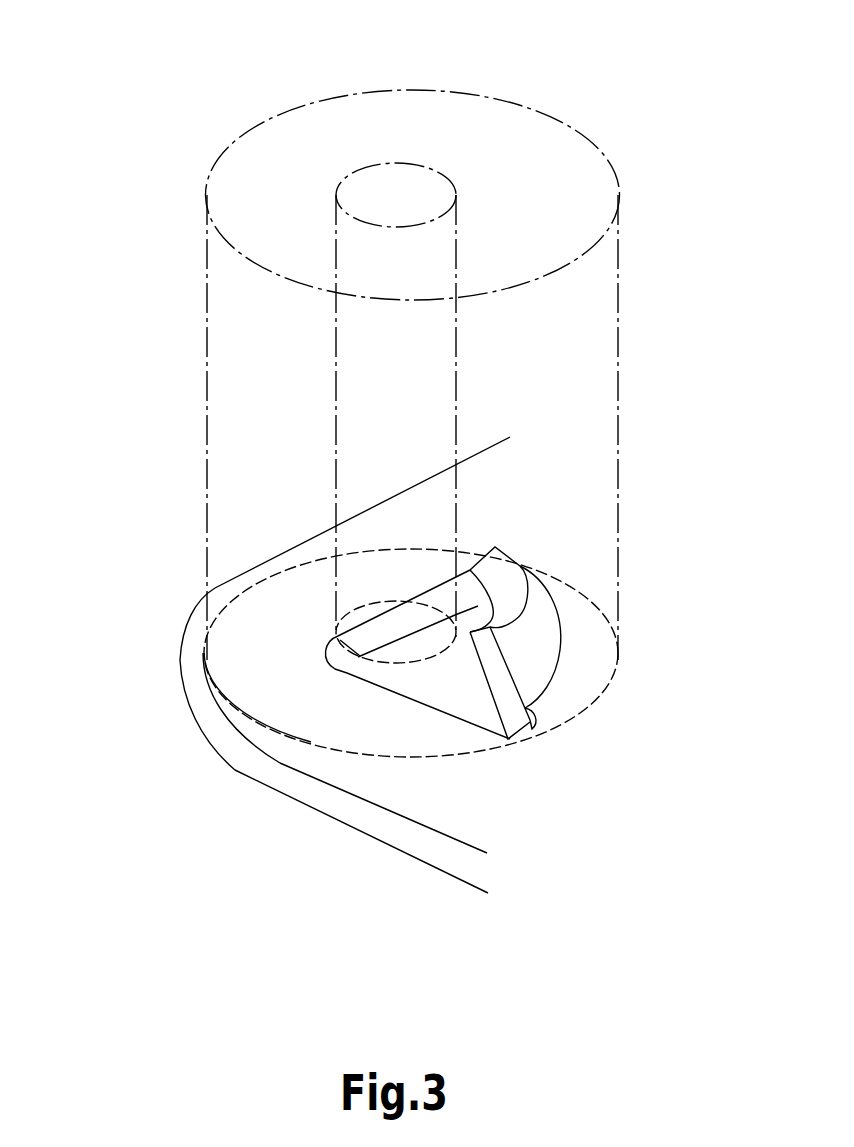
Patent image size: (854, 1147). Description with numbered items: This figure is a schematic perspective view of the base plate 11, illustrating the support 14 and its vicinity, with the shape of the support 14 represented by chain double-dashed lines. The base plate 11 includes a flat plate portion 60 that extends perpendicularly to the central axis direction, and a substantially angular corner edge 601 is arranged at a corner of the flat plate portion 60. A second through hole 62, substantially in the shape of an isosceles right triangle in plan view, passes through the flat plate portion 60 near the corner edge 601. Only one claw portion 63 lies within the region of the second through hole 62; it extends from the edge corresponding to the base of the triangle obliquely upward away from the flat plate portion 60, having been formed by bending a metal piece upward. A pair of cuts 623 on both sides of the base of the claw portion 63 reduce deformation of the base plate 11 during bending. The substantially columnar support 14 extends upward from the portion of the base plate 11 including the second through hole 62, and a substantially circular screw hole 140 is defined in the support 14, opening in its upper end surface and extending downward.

The support 14 is at (223, 370).
The screw hole 140 is at (402, 190).
The flat plate portion 60 is at (267, 612).
The corner edge 601 is at (190, 672).
The base plate 11 is at (322, 839).
The second through hole 62 is at (437, 680).
The claw portion 63 is at (588, 593).
The cuts 623 is at (536, 710).